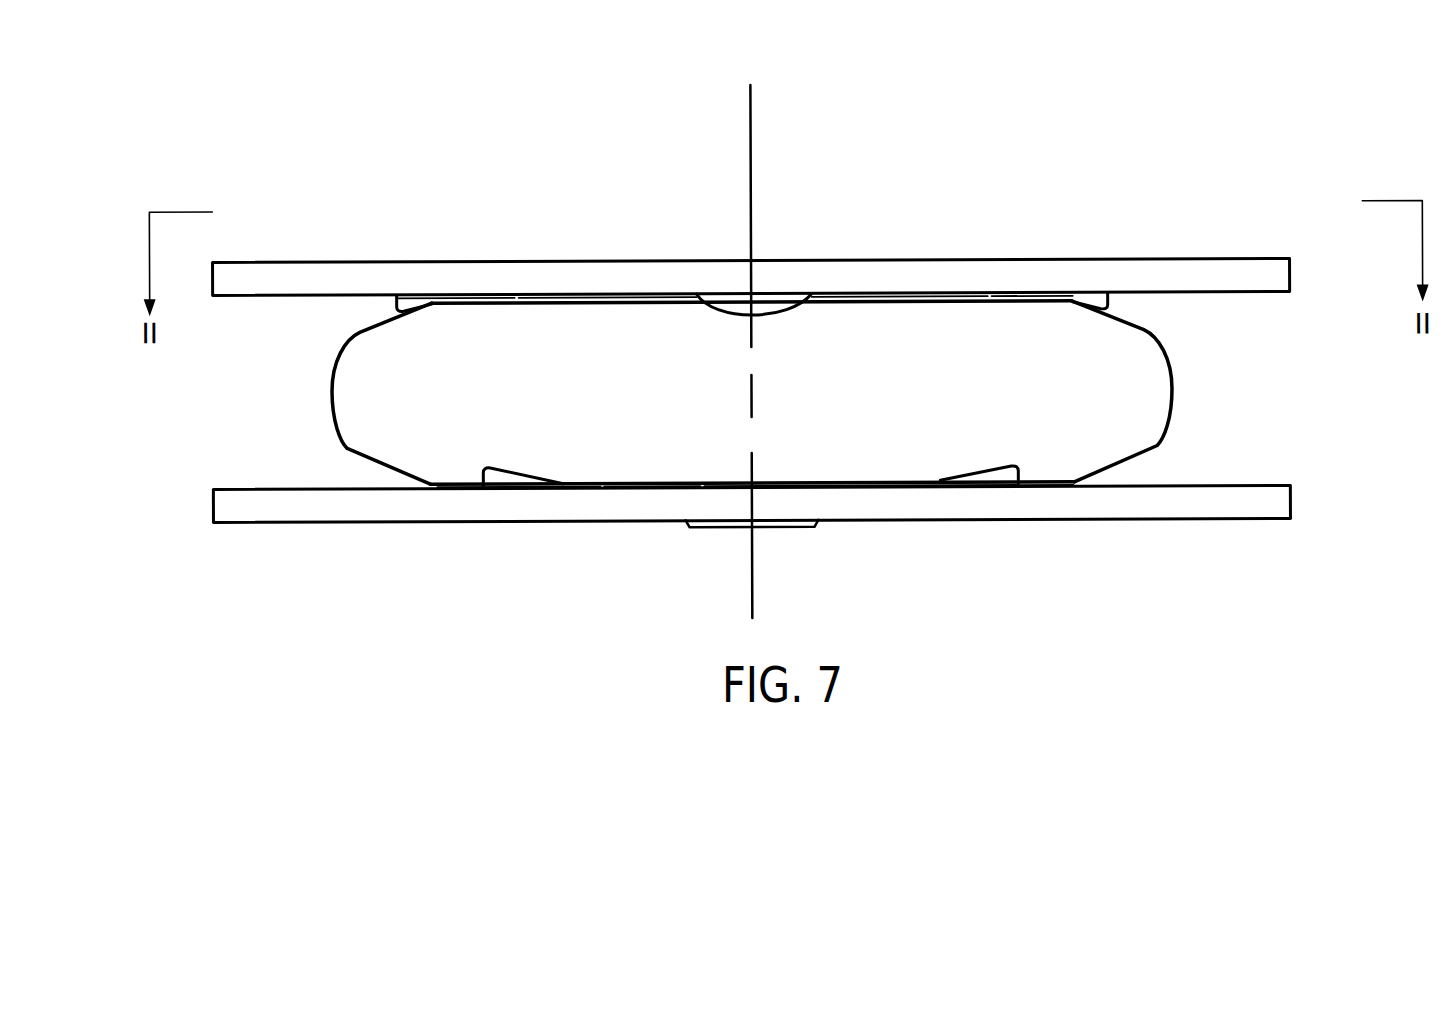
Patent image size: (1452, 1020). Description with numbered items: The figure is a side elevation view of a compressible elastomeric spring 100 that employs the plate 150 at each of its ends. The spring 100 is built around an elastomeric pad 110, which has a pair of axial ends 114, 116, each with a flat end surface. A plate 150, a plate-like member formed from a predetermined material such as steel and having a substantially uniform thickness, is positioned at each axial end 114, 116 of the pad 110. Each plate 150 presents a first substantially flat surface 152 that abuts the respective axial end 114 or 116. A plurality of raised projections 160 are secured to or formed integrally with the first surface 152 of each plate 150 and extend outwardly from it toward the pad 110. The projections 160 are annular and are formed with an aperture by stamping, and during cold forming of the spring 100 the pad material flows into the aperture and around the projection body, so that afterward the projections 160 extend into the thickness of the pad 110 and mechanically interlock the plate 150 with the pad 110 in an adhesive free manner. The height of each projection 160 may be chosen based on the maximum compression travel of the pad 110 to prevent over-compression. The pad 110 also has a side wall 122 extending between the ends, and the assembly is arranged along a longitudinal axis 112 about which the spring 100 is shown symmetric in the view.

The compressible elastomeric spring 100 is at (1122, 168).
The elastomeric pad 110 is at (1177, 389).
The longitudinal axis 112 is at (753, 120).
The axial end 114 is at (440, 486).
The axial end 116 is at (431, 301).
The side wall of flexible spring member 122 is at (331, 395).
The plate 150 is at (1235, 259).
The first substantially flat surface 152 is at (1240, 294).
The raised projection 160 is at (392, 308).